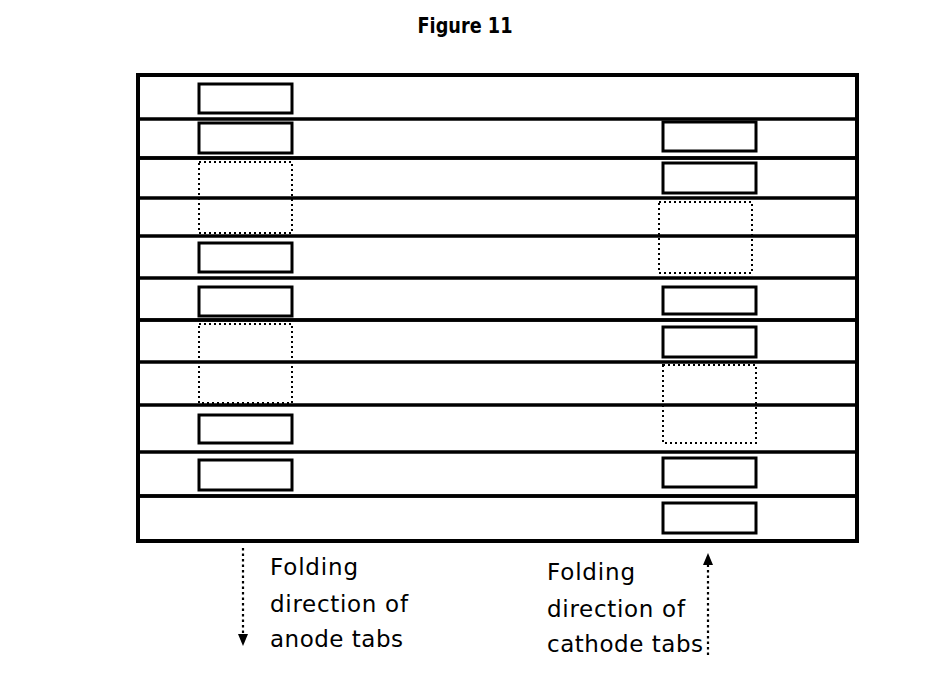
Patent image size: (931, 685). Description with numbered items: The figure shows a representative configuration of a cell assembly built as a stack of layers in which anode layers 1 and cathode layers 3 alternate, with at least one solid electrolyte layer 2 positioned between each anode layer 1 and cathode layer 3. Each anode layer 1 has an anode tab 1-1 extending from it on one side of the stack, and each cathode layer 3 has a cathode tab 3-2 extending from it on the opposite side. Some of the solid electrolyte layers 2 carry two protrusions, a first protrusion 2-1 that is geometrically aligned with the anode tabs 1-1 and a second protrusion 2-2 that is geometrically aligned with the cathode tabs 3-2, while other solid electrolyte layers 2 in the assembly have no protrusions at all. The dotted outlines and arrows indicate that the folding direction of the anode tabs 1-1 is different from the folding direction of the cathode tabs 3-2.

The anode layer 1 is at (130, 103).
The solid electrolyte layer 2 is at (130, 139).
The cathode layer 3 is at (130, 175).
The anode tab 1-1 is at (245, 264).
The first protrusion 2-1 is at (245, 307).
The second protrusion 2-2 is at (709, 305).
The cathode tab 3-2 is at (709, 348).